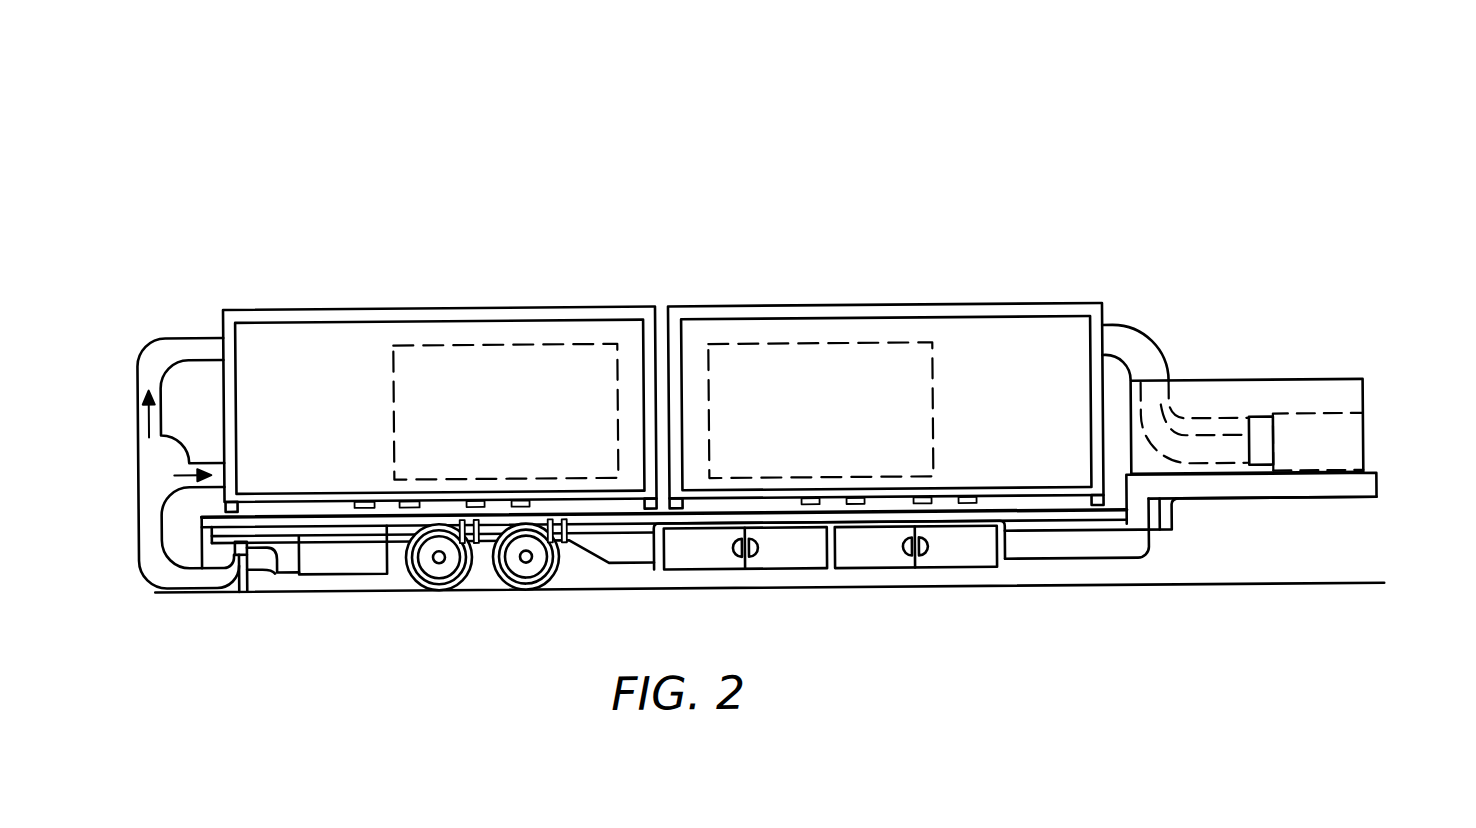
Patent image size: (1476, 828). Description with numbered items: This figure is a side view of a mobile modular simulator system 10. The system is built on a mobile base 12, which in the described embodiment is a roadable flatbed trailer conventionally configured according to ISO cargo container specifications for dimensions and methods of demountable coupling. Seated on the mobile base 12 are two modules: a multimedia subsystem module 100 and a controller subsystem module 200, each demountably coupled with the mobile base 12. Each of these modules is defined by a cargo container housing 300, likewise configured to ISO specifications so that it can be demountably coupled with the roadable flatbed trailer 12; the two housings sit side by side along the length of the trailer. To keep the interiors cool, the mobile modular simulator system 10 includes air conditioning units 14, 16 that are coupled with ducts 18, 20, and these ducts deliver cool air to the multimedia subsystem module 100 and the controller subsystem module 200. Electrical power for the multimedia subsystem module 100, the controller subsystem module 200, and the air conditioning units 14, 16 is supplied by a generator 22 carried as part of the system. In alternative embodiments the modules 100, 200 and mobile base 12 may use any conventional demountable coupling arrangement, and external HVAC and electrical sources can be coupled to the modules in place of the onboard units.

The mobile modular simulator system 10 is at (387, 193).
The mobile base 12 is at (1070, 566).
The air conditioning unit 14 is at (1365, 452).
The air conditioning unit 16 is at (337, 558).
The duct 18 is at (1137, 332).
The duct 20 is at (203, 338).
The generator 22 is at (1247, 388).
The multimedia subsystem module 100 is at (307, 298).
The controller subsystem module 200 is at (907, 298).
The cargo container housing 300 is at (630, 310).